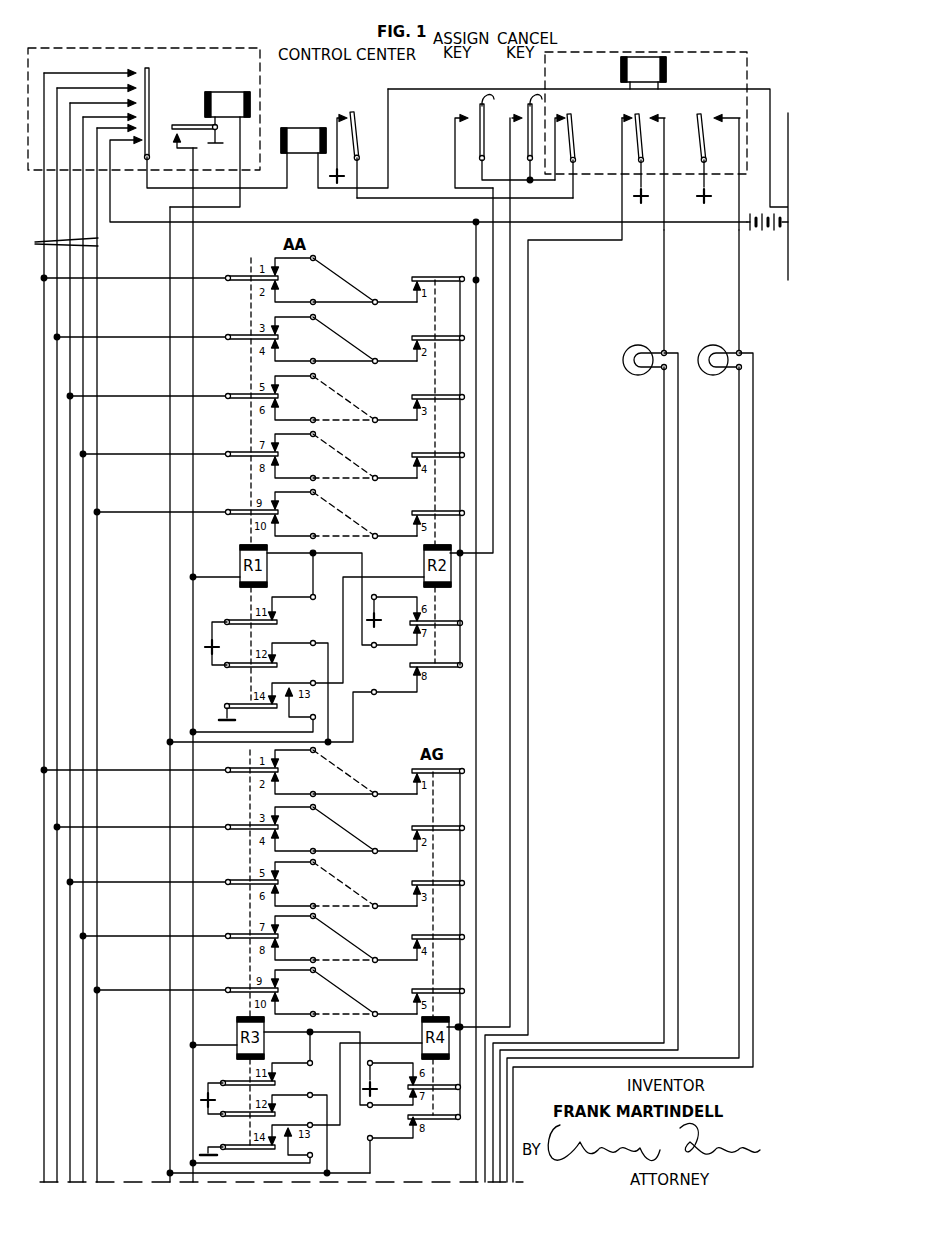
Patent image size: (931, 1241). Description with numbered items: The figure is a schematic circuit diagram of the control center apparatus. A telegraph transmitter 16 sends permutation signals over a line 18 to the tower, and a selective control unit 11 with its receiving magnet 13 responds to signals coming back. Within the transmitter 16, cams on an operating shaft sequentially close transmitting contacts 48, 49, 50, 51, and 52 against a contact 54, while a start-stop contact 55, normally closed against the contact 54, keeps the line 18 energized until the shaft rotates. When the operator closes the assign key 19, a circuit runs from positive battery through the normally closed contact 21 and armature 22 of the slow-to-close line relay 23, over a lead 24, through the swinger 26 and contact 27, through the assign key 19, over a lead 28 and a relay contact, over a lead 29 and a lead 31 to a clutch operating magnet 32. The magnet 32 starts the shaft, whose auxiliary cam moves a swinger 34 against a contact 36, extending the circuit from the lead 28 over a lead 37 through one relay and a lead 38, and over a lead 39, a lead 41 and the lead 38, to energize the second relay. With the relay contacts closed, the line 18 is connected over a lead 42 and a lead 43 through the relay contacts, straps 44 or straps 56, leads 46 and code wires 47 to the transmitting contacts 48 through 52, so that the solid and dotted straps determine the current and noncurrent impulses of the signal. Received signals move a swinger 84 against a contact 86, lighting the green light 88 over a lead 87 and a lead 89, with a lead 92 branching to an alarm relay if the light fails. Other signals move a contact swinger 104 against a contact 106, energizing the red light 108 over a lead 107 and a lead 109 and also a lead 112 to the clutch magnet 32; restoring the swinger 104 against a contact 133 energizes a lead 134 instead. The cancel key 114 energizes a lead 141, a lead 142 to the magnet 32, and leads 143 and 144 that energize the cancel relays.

The telegraph transmitter 16 is at (112, 48).
The contact 54 is at (150, 70).
The transmitting contact 48 is at (132, 70).
The transmitting contact 49 is at (138, 87).
The transmitting contact 50 is at (138, 102).
The transmitting contact 51 is at (138, 116).
The transmitting contact 52 is at (138, 128).
The start-stop contact 55 is at (130, 144).
The contact 36 is at (177, 152).
The swinger 34 is at (183, 146).
The clutch operating magnet 32 is at (240, 92).
The slow-to-close line relay 23 is at (310, 128).
The normally closed contact 21 is at (348, 108).
The armature 22 is at (360, 118).
The lead 24 is at (413, 200).
The assign key 19 is at (489, 90).
The cancel key 114 is at (537, 90).
The selective control unit 11 is at (580, 52).
The receiving magnet 13 is at (650, 57).
The contact 27 is at (568, 114).
The swinger 26 is at (574, 112).
The contact swinger 104 is at (640, 108).
The contact 106 is at (666, 118).
The contact 133 is at (636, 126).
The swinger 84 is at (702, 112).
The contact 86 is at (716, 120).
The line 18 is at (784, 232).
The code wires 47 is at (58, 242).
The leads 46 is at (122, 512).
The lead 38 is at (196, 411).
The lead 31 is at (170, 565).
The lead 28 is at (493, 248).
The lead 42 is at (476, 268).
The lead 43 is at (466, 283).
The straps 56 is at (328, 383).
The straps 44 is at (353, 362).
The lead 37 is at (370, 566).
The lead 39 is at (345, 652).
The lead 41 is at (175, 738).
The lead 29 is at (353, 746).
The lead 107 is at (664, 298).
The lead 87 is at (739, 298).
The red light 108 is at (630, 375).
The green light 88 is at (718, 374).
The lead 134 is at (528, 410).
The lead 141 is at (510, 654).
The lead 109 is at (664, 706).
The lead 89 is at (739, 746).
The lead 92 is at (753, 786).
The lead 112 is at (678, 796).
The lead 143 is at (360, 1042).
The lead 144 is at (340, 1108).
The lead 142 is at (370, 1143).